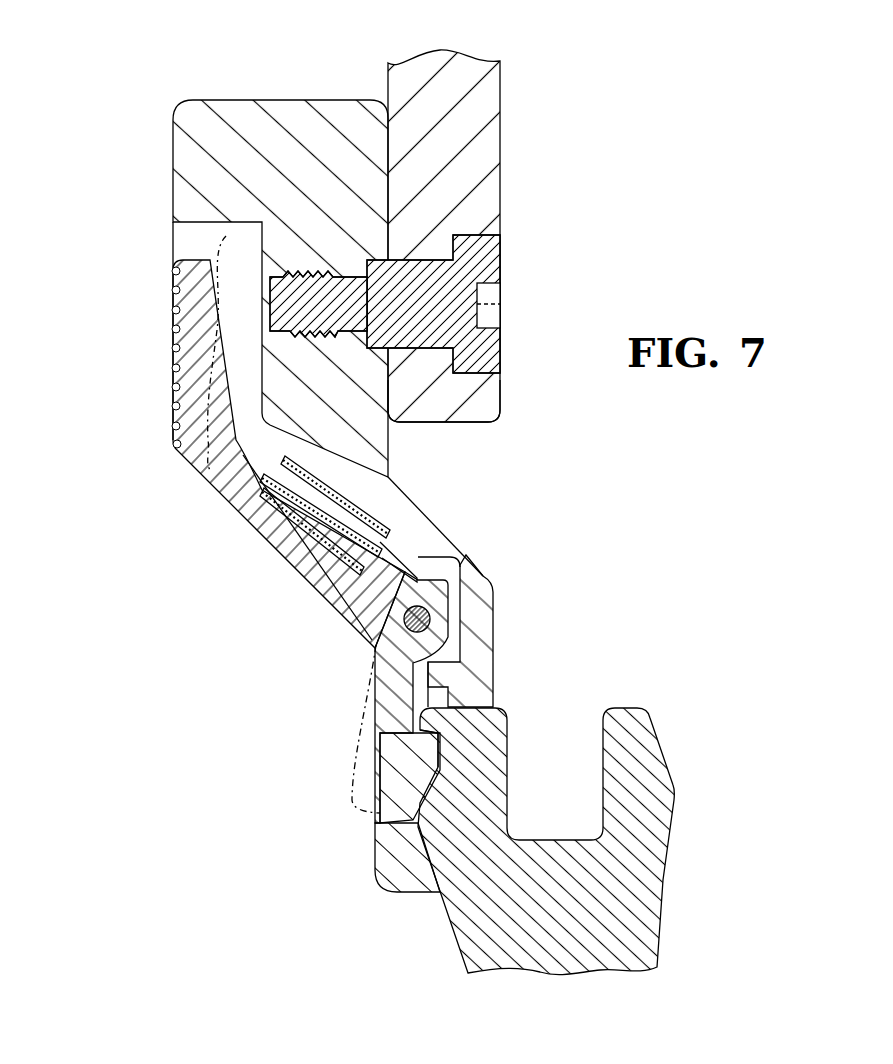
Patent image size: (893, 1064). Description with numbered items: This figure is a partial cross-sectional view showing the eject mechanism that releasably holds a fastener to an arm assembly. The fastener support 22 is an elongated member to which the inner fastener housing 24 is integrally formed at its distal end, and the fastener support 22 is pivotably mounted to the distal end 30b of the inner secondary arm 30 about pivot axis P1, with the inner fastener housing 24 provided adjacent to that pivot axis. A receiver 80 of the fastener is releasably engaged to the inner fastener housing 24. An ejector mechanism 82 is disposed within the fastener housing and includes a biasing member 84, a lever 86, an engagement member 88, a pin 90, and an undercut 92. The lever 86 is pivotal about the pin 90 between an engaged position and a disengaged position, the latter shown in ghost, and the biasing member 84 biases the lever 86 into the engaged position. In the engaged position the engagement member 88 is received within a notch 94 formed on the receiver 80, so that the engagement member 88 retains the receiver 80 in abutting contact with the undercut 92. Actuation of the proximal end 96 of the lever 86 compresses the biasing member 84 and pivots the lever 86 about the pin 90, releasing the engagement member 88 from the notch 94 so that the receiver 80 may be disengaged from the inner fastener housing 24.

The fastener support 22 is at (245, 120).
The inner fastener housing 24 is at (127, 98).
The inner secondary arm 30 is at (472, 153).
The distal end of inner secondary arm 30b is at (490, 402).
The receiver 80 is at (652, 755).
The ejector mechanism 82 is at (502, 684).
The biasing member 84 is at (340, 503).
The lever 86 is at (307, 560).
The engagement member 88 is at (423, 763).
The pin 90 is at (418, 606).
The undercut 92 is at (470, 705).
The notch 94 is at (440, 742).
The proximal end of lever 96 is at (173, 350).